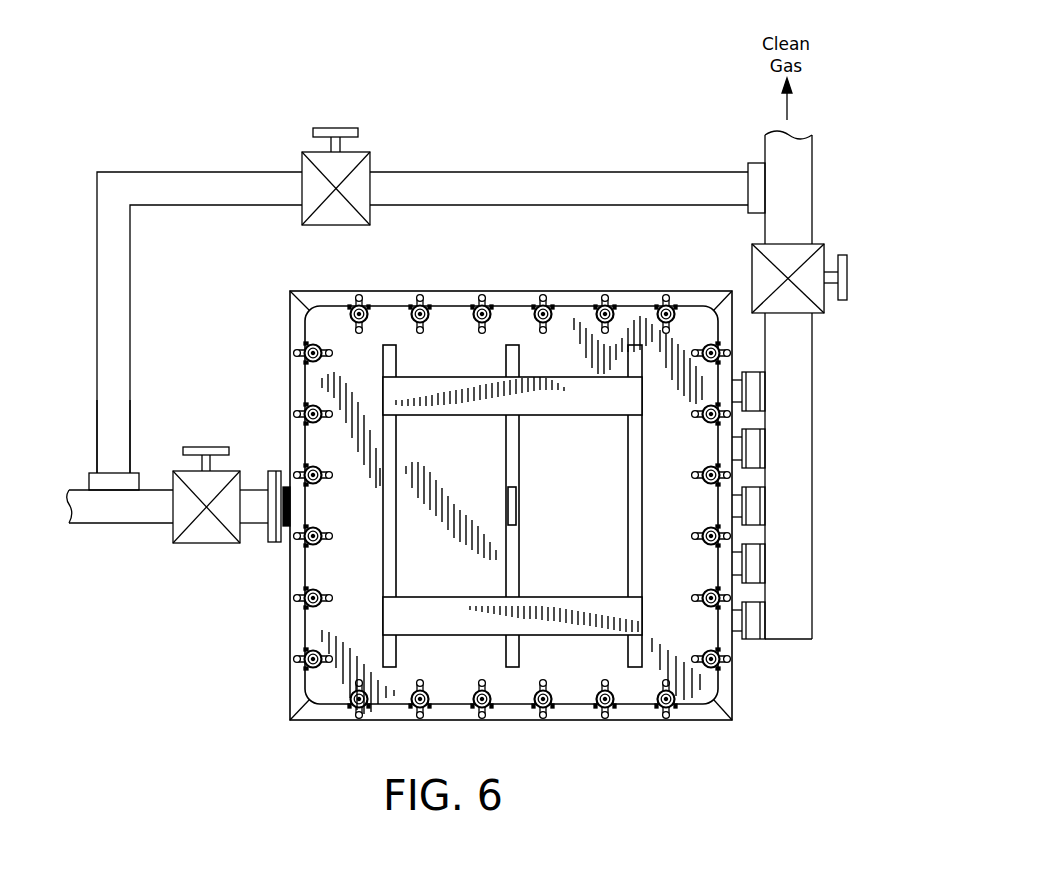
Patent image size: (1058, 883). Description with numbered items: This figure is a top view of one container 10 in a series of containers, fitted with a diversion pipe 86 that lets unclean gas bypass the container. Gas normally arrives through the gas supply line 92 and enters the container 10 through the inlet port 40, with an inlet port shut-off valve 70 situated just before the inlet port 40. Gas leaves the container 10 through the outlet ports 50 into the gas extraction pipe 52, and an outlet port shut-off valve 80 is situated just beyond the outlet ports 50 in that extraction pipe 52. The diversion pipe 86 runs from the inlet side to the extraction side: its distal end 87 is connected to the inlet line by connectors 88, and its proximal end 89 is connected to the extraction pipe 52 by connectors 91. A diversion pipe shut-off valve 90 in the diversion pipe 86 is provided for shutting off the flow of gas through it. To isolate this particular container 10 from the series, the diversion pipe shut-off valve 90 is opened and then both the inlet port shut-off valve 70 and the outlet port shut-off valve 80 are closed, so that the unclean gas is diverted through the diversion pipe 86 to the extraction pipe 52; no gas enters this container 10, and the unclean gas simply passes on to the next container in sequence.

The container 10 is at (466, 548).
The inlet port 40 is at (273, 471).
The outlet ports 50 is at (750, 640).
The gas extraction pipe 52 is at (782, 640).
The inlet port shut-off valve 70 is at (205, 543).
The outlet port shut-off valve 80 is at (752, 265).
The diversion pipe 86 is at (130, 287).
The distal end 87 is at (131, 431).
The connectors 88 is at (88, 481).
The proximal end 89 is at (699, 172).
The diversion pipe shut-off valve 90 is at (331, 128).
The connectors 91 is at (758, 163).
The gas supply pipe 92 is at (128, 523).